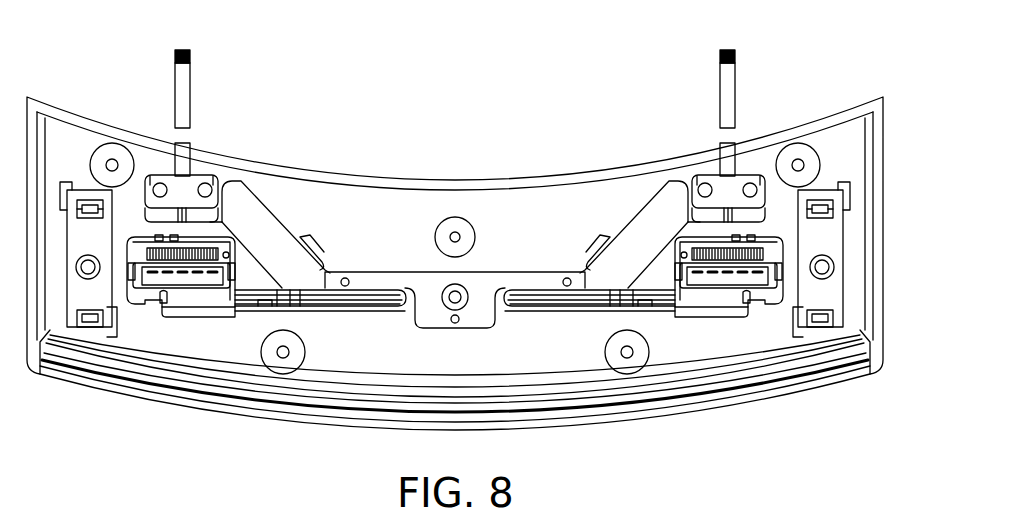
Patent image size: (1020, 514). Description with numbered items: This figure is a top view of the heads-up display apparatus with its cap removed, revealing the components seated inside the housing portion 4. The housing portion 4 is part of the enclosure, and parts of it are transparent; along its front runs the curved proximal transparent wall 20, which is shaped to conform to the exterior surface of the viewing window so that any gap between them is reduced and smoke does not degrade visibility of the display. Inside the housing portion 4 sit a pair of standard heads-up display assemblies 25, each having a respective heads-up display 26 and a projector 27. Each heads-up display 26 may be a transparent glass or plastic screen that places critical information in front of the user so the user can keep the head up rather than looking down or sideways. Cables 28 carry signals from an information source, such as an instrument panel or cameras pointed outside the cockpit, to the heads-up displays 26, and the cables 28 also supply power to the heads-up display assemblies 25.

The housing portion 4 is at (886, 170).
The proximal transparent wall 20 is at (447, 178).
The heads-up display assembly 25 is at (517, 260).
The heads-up display 26 is at (322, 298).
The projector 27 is at (200, 300).
The cable 28 is at (182, 95).